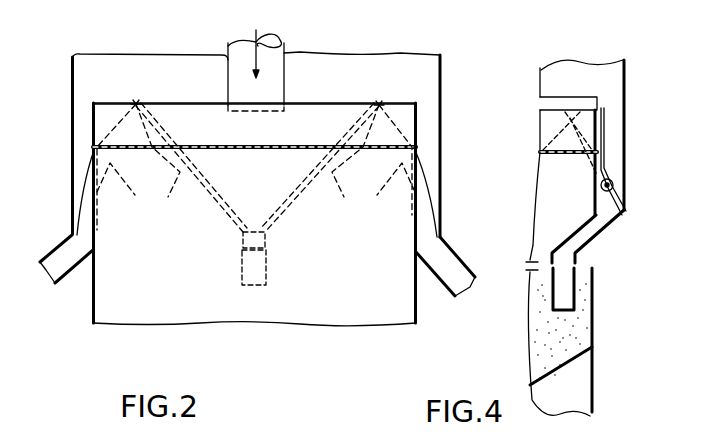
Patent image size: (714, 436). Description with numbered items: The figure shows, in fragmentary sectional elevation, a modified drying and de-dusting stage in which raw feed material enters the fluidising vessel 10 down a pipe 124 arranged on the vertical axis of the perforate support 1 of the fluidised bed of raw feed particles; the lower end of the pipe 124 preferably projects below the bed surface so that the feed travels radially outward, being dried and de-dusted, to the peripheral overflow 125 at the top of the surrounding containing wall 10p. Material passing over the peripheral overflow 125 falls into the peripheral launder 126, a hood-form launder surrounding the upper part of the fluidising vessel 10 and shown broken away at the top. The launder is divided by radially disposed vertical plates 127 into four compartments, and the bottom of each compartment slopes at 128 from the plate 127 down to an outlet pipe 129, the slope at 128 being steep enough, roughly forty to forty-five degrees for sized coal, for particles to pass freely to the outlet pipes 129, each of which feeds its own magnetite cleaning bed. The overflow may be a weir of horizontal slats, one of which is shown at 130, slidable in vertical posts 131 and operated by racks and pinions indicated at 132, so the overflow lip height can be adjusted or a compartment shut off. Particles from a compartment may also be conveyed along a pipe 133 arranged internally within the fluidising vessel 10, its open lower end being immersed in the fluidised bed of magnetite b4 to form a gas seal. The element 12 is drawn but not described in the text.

In FIG. 2, the perforate support 1 is at (258, 150).
In FIG. 2, the fluidising vessel 10 is at (331, 312).
In FIG. 4, the fluidising vessel 10 is at (596, 274).
In FIG. 2, the containing wall 10p is at (93, 116).
In FIG. 2, the outlet element 12 is at (266, 262).
In FIG. 2, the pipe 124 is at (228, 78).
In FIG. 2, the peripheral overflow 125 is at (315, 104).
In FIG. 2, the peripheral launder 126 is at (430, 91).
In FIG. 4, the peripheral launder 126 is at (627, 140).
In FIG. 2, the radially disposed vertical plates 127 is at (137, 100).
In FIG. 2, the sloping compartment bottom 128 is at (80, 204).
In FIG. 2, the outlet pipe 129 is at (58, 250).
In FIG. 4, the slat 130 is at (562, 100).
In FIG. 4, the vertical posts 131 is at (601, 111).
In FIG. 4, the racks and pinions 132 is at (614, 185).
In FIG. 4, the pipe 133 is at (568, 236).
In FIG. 4, the fluidised bed of magnetite b4 is at (542, 342).